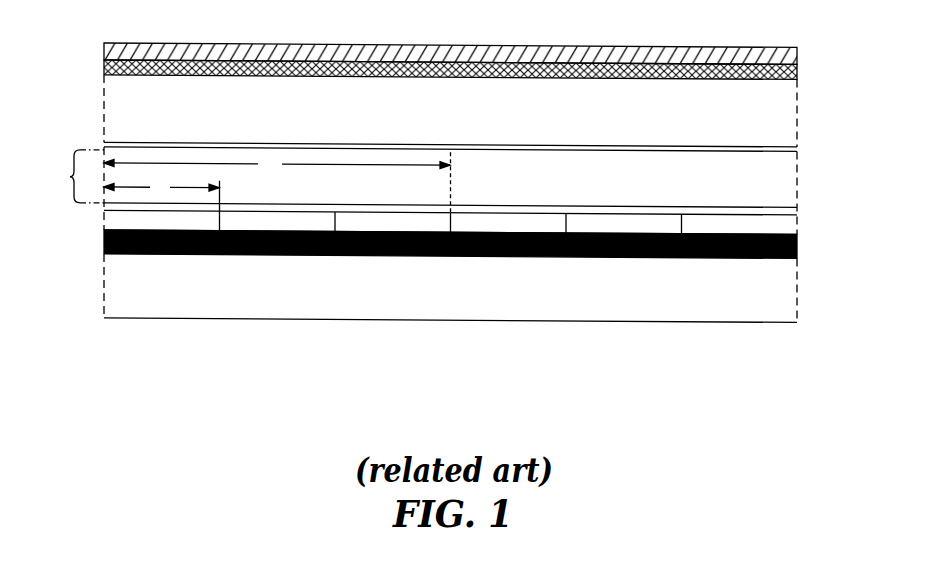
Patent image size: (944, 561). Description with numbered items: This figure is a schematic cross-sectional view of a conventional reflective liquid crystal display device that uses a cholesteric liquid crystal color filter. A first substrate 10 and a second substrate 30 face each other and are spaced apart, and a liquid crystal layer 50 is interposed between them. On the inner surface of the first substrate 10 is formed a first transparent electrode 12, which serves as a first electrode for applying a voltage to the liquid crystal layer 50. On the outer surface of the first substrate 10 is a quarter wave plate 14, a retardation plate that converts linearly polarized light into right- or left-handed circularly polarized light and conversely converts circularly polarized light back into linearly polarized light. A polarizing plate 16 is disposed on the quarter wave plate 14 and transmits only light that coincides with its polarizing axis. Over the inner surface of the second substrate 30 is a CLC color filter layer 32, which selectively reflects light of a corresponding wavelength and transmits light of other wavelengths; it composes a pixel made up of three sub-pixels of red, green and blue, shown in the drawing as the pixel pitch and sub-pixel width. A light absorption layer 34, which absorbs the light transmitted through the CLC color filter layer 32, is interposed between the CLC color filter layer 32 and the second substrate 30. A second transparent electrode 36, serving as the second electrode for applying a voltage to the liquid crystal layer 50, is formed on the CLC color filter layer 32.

The first substrate 10 is at (471, 116).
The first transparent electrode 12 is at (330, 145).
The quarter wave plate 14 is at (797, 80).
The polarizing plate 16 is at (797, 52).
The second substrate 30 is at (481, 302).
The CLC color filter layer 32 is at (797, 215).
The light absorption layer 34 is at (797, 253).
The second transparent electrode 36 is at (670, 206).
The liquid crystal layer 50 is at (246, 191).